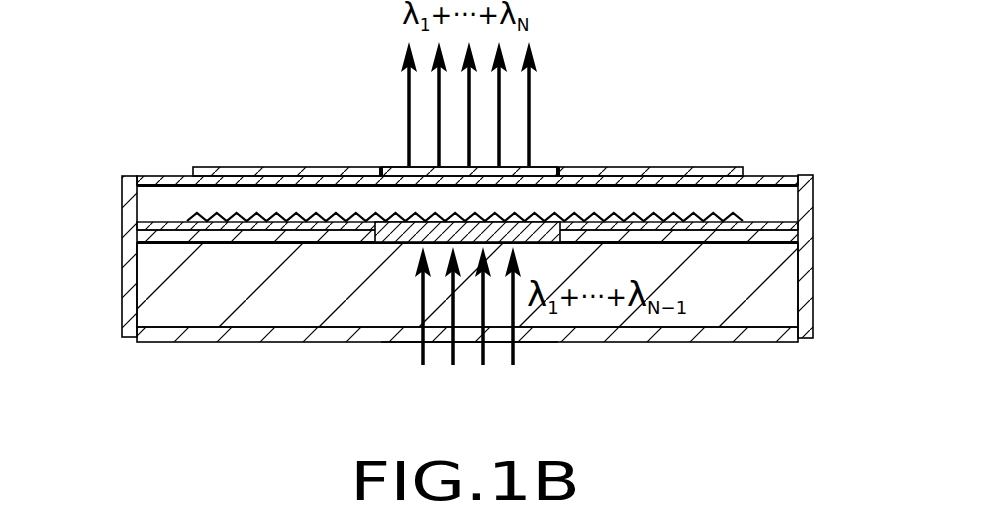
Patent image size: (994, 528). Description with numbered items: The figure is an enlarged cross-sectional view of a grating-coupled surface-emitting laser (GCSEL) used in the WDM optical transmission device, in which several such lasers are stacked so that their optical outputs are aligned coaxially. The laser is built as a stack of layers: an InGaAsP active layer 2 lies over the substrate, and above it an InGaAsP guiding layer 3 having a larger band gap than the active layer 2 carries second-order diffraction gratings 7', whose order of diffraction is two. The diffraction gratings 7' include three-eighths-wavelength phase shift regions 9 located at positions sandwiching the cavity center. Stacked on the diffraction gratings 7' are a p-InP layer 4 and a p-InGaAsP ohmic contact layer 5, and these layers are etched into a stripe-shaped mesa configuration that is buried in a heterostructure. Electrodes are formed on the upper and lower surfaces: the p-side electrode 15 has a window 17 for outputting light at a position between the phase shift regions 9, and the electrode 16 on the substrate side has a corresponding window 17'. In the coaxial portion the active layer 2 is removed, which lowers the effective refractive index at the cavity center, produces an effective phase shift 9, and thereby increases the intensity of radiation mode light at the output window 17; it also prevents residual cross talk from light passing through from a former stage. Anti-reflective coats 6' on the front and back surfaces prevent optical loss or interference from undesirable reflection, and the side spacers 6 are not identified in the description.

The active layer 2 is at (767, 177).
The guiding layer 3 is at (240, 222).
The p-InP layer 4 is at (147, 184).
The ohmic contact layer 5 is at (173, 181).
The spacer side wall 6 is at (462, 256).
The anti-reflective coat 6' is at (477, 257).
The second-order diffraction gratings 7' is at (467, 173).
The phase shift region 9 is at (427, 216).
The p-side electrode 15 is at (673, 167).
The electrode 16 is at (749, 343).
The window 17 is at (502, 140).
The window 17' is at (445, 385).